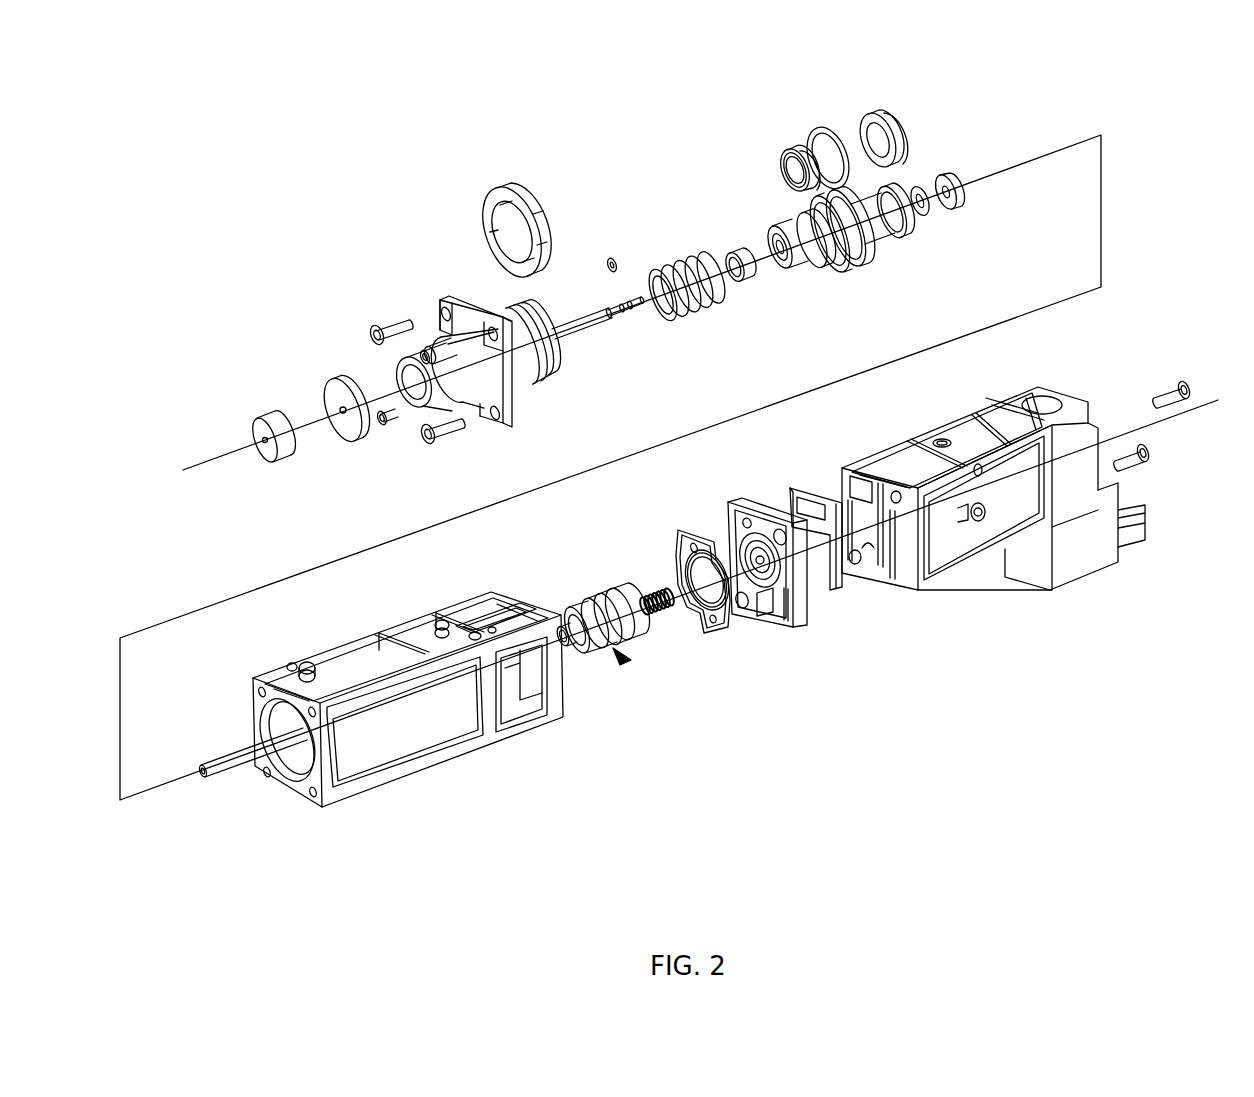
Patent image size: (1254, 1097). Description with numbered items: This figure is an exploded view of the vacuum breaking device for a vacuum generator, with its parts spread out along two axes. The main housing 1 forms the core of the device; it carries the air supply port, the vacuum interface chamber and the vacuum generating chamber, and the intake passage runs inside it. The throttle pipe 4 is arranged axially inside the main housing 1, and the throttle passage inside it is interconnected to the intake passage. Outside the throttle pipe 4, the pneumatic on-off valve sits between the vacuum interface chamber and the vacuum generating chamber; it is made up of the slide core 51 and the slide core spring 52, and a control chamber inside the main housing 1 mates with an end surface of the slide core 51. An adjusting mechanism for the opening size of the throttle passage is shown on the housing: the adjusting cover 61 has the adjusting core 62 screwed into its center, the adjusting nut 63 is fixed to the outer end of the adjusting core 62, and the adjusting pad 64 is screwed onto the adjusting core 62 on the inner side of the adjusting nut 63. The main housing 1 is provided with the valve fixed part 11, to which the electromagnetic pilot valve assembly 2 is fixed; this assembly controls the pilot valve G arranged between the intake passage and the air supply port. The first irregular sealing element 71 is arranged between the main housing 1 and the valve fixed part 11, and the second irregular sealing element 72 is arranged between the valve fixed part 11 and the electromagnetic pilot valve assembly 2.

The main housing 1 is at (437, 727).
The electromagnetic pilot valve assembly 2 is at (957, 542).
The throttle pipe 4 is at (243, 763).
The valve fixed part 11 is at (800, 607).
The slide core 51 is at (862, 210).
The slide core spring 52 is at (692, 263).
The adjusting cover 61 is at (440, 327).
The adjusting core 62 is at (577, 320).
The adjusting nut 63 is at (277, 410).
The adjusting pad 64 is at (340, 393).
The first irregular sealing element 71 is at (722, 628).
The second irregular sealing element 72 is at (845, 590).
The pilot valve G is at (624, 659).